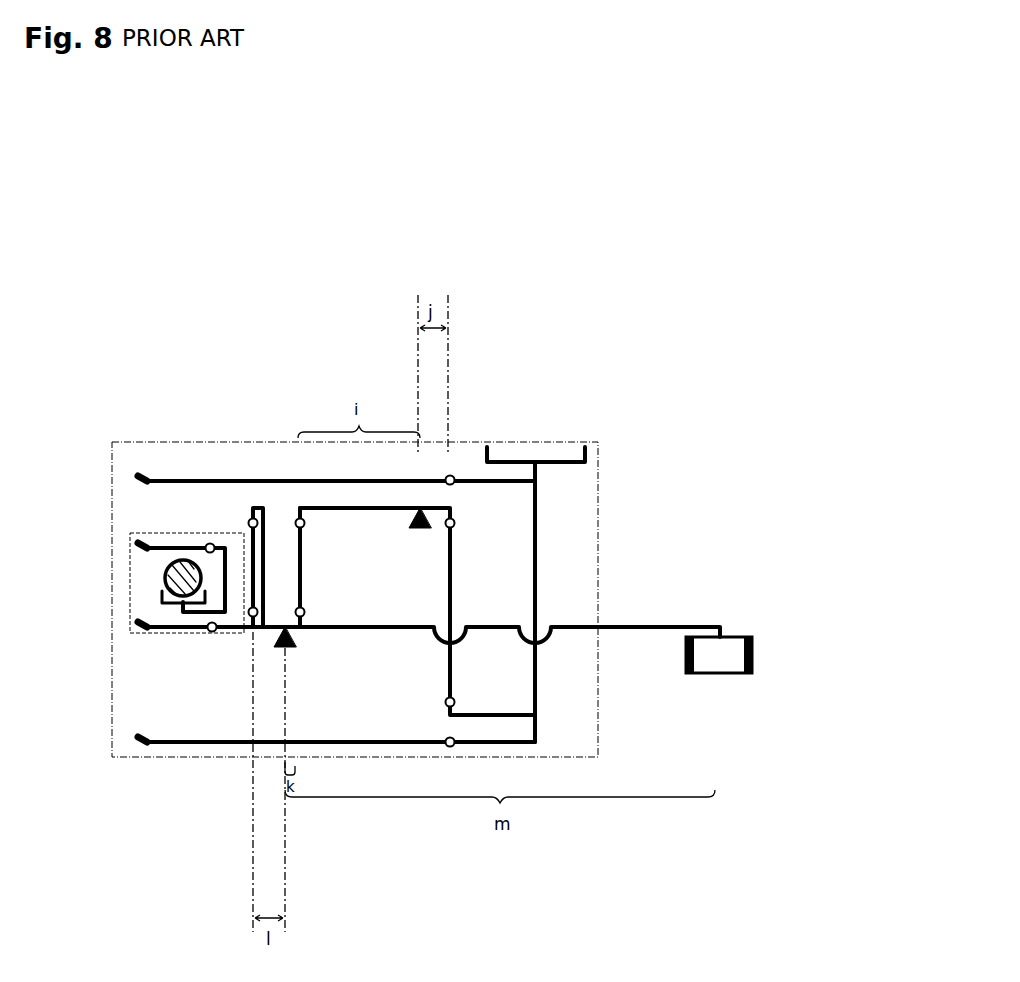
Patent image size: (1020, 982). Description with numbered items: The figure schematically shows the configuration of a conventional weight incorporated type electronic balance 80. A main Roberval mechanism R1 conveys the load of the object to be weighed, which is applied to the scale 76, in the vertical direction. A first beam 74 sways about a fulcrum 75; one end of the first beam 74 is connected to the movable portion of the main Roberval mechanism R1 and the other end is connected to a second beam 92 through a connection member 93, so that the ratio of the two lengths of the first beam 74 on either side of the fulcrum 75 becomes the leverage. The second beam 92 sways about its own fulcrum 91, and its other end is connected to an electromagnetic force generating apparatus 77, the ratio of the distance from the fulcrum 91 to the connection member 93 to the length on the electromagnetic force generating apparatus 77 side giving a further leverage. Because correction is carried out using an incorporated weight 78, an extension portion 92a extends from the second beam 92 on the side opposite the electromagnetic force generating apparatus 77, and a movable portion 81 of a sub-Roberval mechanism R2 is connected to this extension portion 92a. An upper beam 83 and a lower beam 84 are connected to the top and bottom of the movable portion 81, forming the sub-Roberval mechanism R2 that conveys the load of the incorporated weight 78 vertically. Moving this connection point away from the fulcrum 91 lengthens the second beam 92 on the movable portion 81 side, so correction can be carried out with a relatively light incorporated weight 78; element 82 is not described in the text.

The electronic balance 80 is at (434, 242).
The first beam 74 is at (335, 507).
The fulcrum 75 is at (420, 506).
The scale 76 is at (548, 458).
The electromagnetic force generating apparatus 77 is at (721, 658).
The incorporated weight 78 is at (165, 580).
The movable portion 81 is at (209, 546).
The armature bracket 82 is at (162, 600).
The upper beam 83 is at (137, 545).
The lower beam 84 is at (178, 632).
The fulcrum 91 is at (290, 648).
The second beam 92 is at (630, 624).
The extension portion 92a is at (266, 640).
The connection member 93 is at (300, 557).
The main Roberval mechanism R1 is at (412, 757).
The sub-Roberval mechanism R2 is at (130, 548).